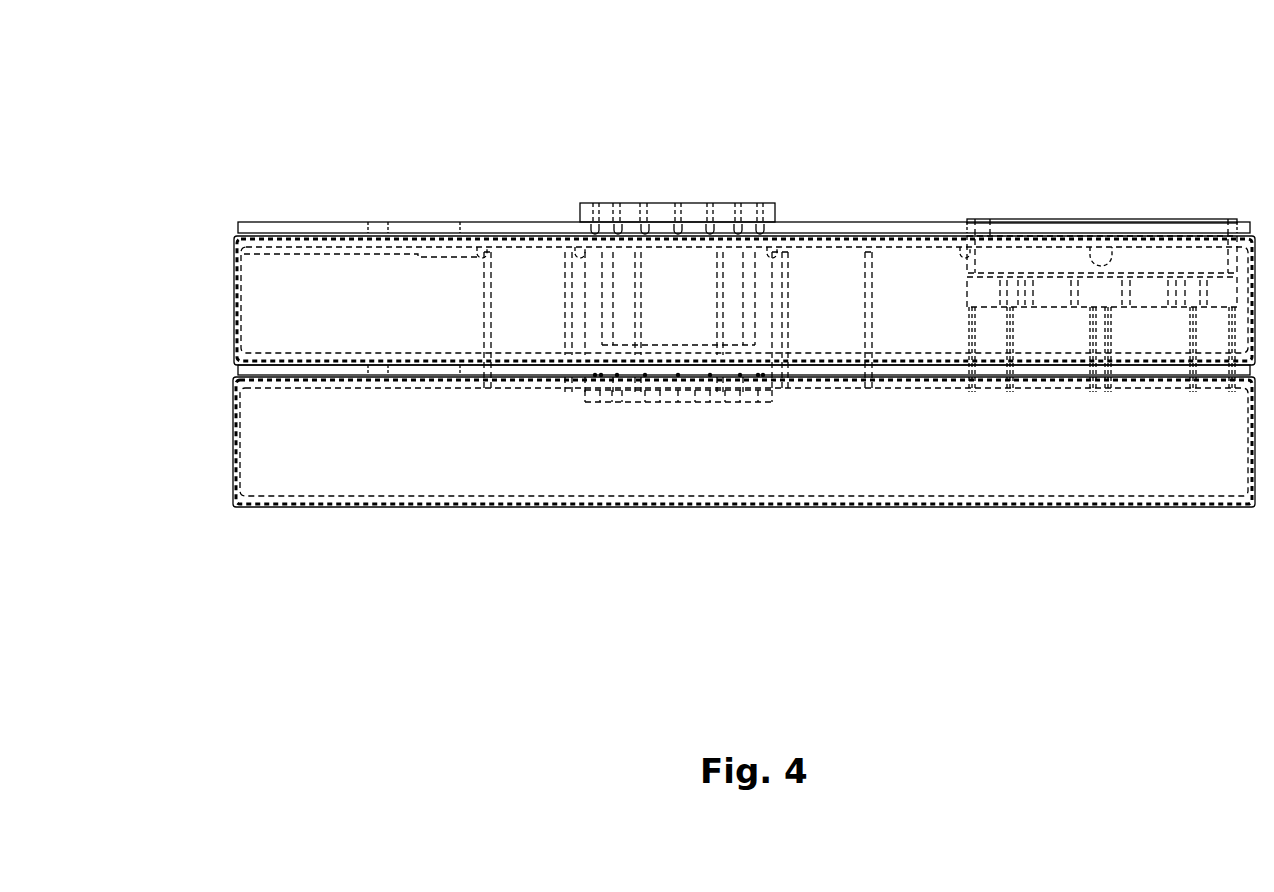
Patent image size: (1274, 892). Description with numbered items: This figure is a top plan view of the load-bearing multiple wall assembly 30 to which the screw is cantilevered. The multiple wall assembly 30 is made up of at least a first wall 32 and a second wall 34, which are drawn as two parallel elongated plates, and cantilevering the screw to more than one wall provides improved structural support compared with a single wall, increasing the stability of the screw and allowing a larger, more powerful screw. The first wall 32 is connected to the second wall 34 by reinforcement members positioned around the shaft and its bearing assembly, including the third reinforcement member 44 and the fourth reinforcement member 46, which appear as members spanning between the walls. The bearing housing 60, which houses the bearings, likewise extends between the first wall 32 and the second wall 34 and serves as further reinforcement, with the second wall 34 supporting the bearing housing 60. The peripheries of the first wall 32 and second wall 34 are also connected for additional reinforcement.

The multiple wall assembly 30 is at (478, 66).
The first wall 32 is at (237, 229).
The second wall 34 is at (237, 368).
The third reinforcement member 44 is at (483, 288).
The bearing housing 60 is at (772, 288).
The fourth reinforcement member 46 is at (867, 288).